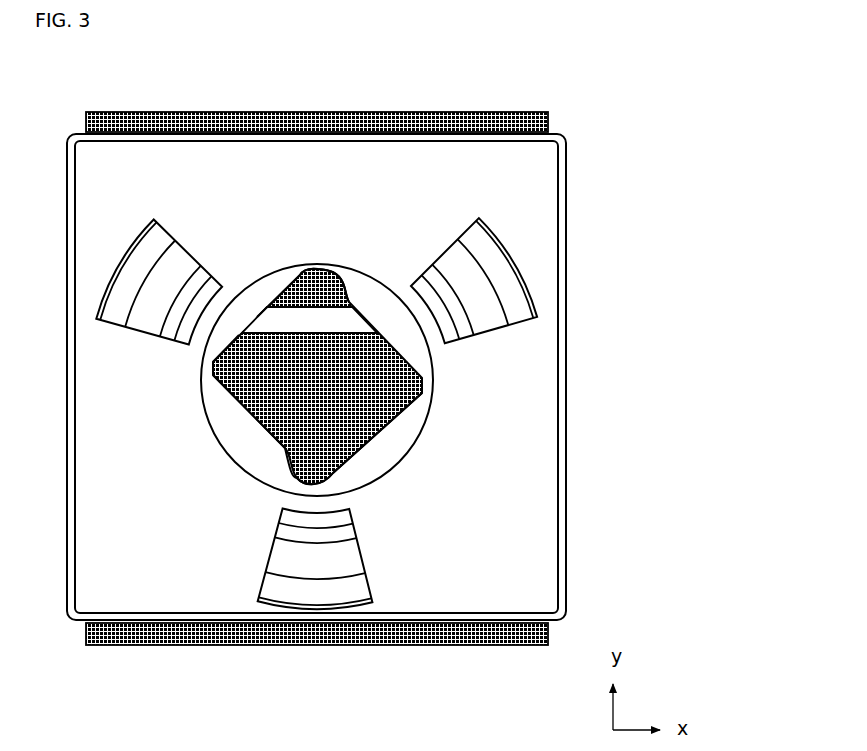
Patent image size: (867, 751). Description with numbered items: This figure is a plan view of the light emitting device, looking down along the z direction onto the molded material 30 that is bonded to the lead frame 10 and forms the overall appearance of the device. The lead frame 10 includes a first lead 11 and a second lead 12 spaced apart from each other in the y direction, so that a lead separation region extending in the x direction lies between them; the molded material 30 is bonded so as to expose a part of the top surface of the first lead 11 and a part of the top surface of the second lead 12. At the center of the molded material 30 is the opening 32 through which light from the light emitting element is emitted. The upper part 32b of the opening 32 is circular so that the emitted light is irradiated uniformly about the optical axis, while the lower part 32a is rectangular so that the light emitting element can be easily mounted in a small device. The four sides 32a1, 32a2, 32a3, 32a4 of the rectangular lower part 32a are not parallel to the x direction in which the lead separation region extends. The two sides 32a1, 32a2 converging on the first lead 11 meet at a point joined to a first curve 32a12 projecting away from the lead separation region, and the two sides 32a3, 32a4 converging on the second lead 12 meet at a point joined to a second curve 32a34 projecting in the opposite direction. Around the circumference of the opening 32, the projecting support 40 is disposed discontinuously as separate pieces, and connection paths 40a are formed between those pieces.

The lead frame 10 is at (317, 378).
The first lead 11 is at (460, 636).
The second lead 12 is at (460, 122).
The molded material 30 is at (556, 206).
The opening 32 is at (467, 433).
The lower part of the opening 32a is at (473, 439).
The first side 32a1 is at (347, 463).
The second side 32a2 is at (260, 418).
The third side 32a3 is at (239, 335).
The fourth side 32a4 is at (257, 317).
The first curve 32a12 is at (313, 483).
The second curve 32a34 is at (332, 272).
The upper part of the opening 32b is at (433, 348).
The projecting support 40 is at (141, 297).
The connection path 40a is at (304, 186).